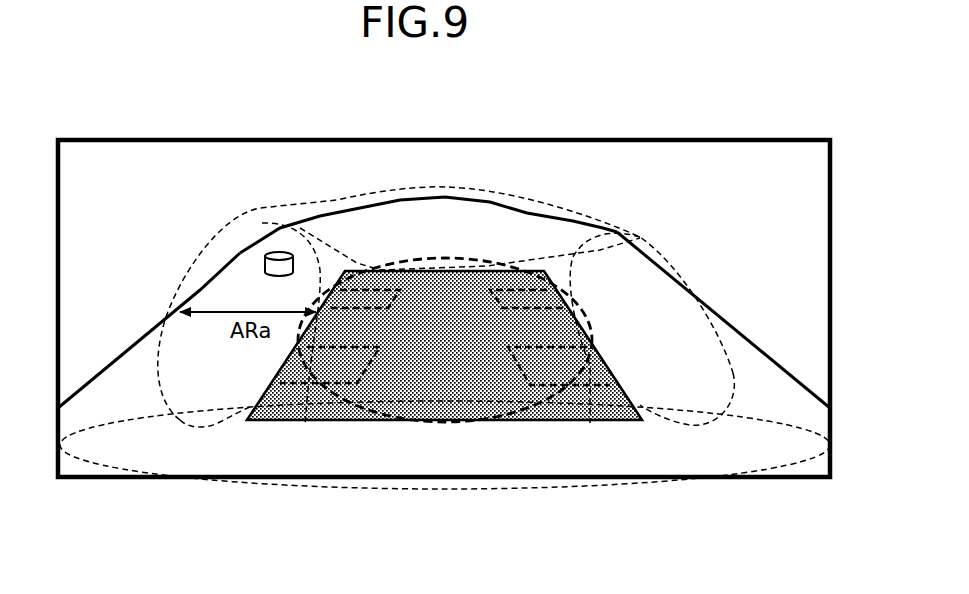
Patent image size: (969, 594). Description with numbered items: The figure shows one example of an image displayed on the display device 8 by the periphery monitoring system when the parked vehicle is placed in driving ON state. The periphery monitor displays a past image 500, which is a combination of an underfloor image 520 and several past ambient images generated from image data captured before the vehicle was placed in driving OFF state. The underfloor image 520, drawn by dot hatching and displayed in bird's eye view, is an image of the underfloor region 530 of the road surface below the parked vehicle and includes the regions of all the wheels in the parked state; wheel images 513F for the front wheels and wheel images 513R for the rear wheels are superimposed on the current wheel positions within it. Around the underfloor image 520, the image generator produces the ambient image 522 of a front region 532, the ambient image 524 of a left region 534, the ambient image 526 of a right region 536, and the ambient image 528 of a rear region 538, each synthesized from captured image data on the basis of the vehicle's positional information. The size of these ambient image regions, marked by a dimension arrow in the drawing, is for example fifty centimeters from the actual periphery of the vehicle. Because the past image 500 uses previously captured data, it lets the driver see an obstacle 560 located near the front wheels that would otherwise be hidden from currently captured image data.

The display device 8 is at (753, 138).
The past image 500 is at (444, 314).
The underfloor image 520 is at (372, 430).
The ambient image 522 is at (447, 188).
The ambient image 524 is at (147, 398).
The ambient image 526 is at (761, 398).
The ambient image 528 is at (460, 466).
The underfloor region 530 is at (523, 423).
The front region 532 is at (283, 210).
The left region 534 is at (197, 430).
The right region 536 is at (703, 430).
The rear region 538 is at (410, 490).
The wheel images 513F is at (373, 270).
The wheel images 513R is at (305, 425).
The obstacle 560 is at (280, 252).